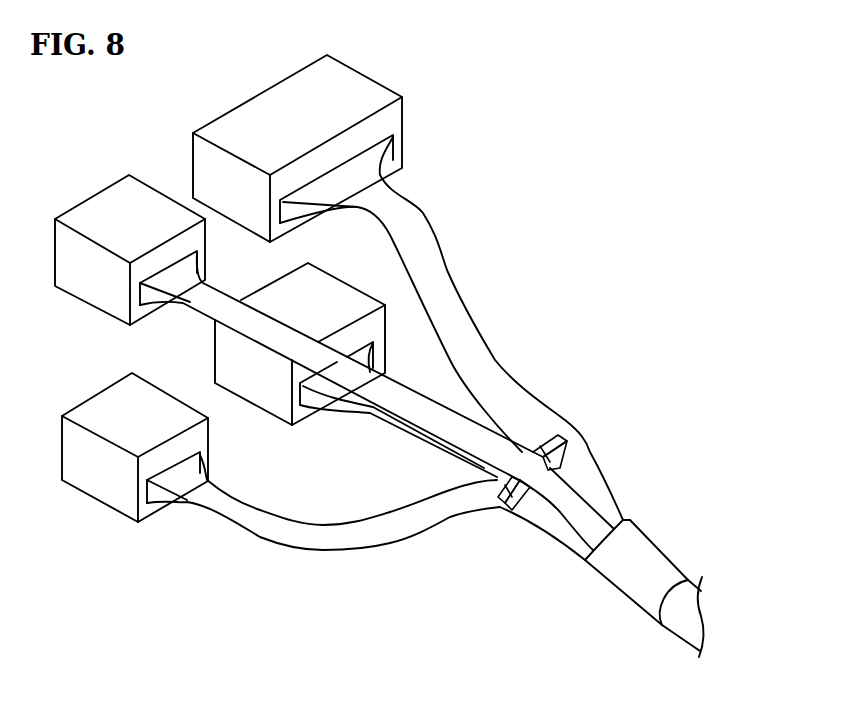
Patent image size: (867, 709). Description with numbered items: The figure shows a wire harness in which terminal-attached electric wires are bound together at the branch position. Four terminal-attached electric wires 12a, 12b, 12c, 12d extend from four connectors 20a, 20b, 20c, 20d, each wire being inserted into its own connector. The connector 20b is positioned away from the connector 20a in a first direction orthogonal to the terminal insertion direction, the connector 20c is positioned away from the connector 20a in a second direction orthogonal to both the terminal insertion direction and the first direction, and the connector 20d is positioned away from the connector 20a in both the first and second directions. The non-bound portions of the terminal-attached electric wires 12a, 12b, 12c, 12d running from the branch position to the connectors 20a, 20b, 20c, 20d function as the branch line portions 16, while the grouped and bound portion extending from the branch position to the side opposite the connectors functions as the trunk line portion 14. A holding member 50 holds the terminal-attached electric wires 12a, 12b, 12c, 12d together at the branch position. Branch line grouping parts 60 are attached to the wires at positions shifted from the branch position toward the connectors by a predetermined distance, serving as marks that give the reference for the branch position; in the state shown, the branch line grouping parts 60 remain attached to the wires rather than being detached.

The connector 20a is at (94, 196).
The connector 20b is at (233, 110).
The connector 20c is at (73, 409).
The connector 20d is at (270, 413).
The terminal-attached electric wire 12a is at (198, 312).
The terminal-attached electric wire 12b is at (424, 214).
The terminal-attached electric wire 12c is at (297, 548).
The terminal-attached electric wire 12d is at (437, 450).
The branch line portion 16 is at (398, 412).
The branch line grouping part 60 is at (541, 438).
The holding member 50 is at (615, 562).
The trunk line portion 14 is at (682, 623).